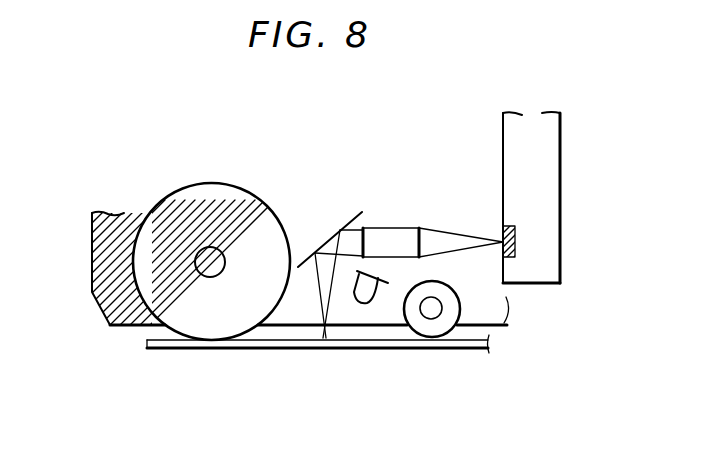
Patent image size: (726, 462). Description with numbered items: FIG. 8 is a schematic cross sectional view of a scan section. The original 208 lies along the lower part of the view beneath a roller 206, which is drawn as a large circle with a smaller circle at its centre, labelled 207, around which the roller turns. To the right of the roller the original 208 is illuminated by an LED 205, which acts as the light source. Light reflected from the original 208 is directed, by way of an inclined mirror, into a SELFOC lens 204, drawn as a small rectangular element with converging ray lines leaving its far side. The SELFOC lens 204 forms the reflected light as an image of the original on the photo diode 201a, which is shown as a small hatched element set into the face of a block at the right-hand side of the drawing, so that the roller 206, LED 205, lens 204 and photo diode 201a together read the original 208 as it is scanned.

The photo diode 201a is at (515, 237).
The SELFOC lens 204 is at (388, 231).
The LED 205 is at (358, 296).
The roller 206 is at (226, 192).
The shaft 207 is at (205, 257).
The original 208 is at (468, 343).